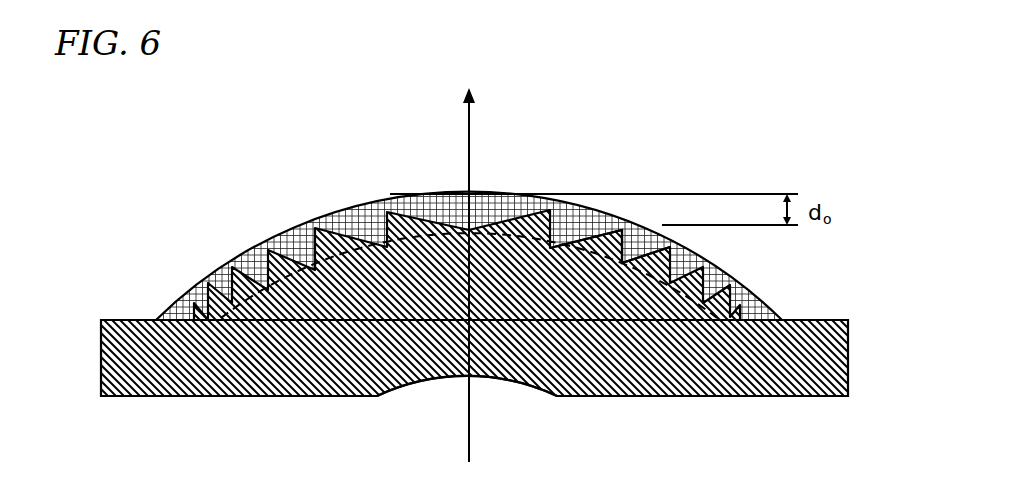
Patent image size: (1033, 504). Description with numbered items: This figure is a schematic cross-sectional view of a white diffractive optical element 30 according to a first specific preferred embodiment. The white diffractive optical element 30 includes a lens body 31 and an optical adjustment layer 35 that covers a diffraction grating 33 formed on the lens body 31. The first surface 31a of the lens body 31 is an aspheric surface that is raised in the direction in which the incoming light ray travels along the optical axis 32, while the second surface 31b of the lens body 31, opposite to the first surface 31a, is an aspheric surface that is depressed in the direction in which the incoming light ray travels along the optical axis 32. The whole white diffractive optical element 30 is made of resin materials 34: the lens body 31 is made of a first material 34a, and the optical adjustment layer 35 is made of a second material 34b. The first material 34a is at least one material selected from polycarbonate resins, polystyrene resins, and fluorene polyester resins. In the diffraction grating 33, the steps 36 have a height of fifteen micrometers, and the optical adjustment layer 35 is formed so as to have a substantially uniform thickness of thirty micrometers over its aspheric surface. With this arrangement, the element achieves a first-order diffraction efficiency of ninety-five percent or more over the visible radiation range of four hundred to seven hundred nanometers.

The white diffractive optical element 30 is at (135, 125).
The lens body 31 is at (778, 353).
The first surface 31a is at (690, 272).
The second surface 31b is at (505, 380).
The optical axis 32 is at (469, 177).
The diffraction grating 33 is at (650, 267).
The resin materials 34 is at (133, 148).
The first material 34a is at (516, 252).
The second material 34b is at (283, 230).
The optical adjustment layer 35 is at (578, 210).
The steps 36 is at (622, 263).